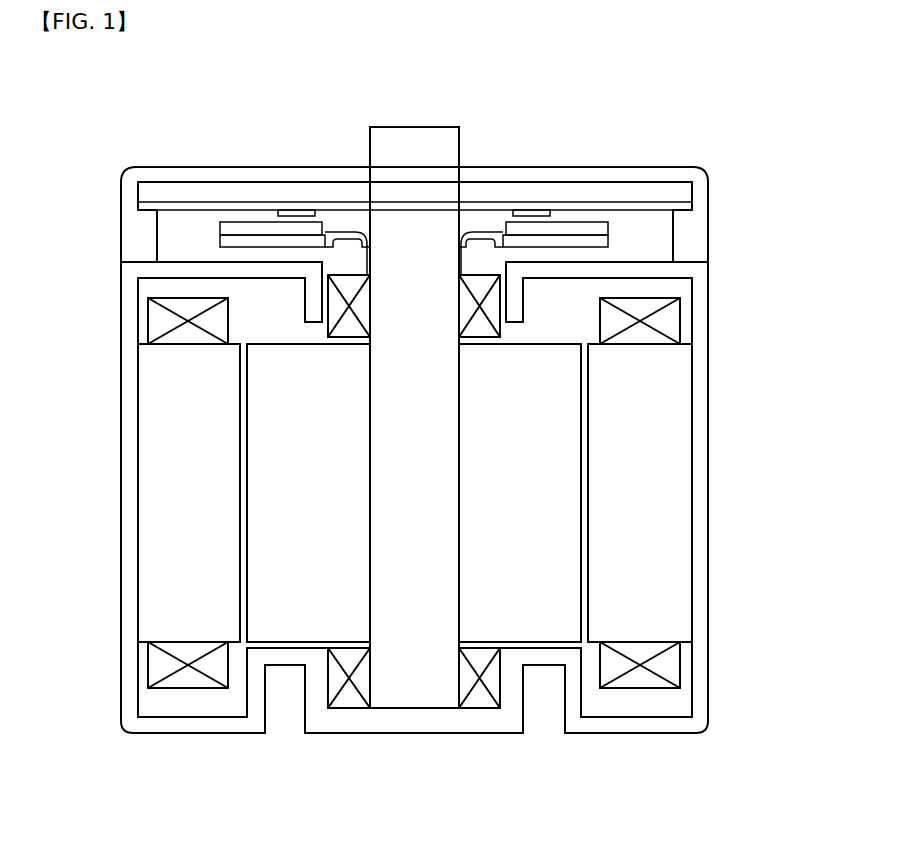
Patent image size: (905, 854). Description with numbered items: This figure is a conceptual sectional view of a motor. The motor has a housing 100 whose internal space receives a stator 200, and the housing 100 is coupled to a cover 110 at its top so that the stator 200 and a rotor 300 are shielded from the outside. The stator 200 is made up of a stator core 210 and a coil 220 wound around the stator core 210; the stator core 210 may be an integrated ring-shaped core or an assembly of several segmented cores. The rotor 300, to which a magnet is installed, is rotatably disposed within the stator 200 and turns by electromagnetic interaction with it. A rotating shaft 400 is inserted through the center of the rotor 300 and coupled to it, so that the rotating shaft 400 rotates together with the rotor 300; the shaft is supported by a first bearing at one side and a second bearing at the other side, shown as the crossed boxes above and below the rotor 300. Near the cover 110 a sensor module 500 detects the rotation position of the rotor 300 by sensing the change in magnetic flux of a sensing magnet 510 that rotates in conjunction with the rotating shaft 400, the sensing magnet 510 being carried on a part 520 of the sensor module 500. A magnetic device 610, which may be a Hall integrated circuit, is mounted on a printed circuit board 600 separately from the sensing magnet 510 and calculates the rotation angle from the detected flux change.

The housing 100 is at (698, 452).
The cover 110 is at (706, 226).
The stator 200 is at (475, 493).
The stator core 210 is at (687, 382).
The coil 220 is at (675, 315).
The rotor 300 is at (543, 506).
The rotating shaft 400 is at (407, 685).
The sensor module 500 is at (405, 170).
The sensing magnet 510 is at (275, 222).
The magnet holder 520 is at (243, 233).
The printed circuit board 600 is at (667, 197).
The magnetic device 610 is at (538, 207).